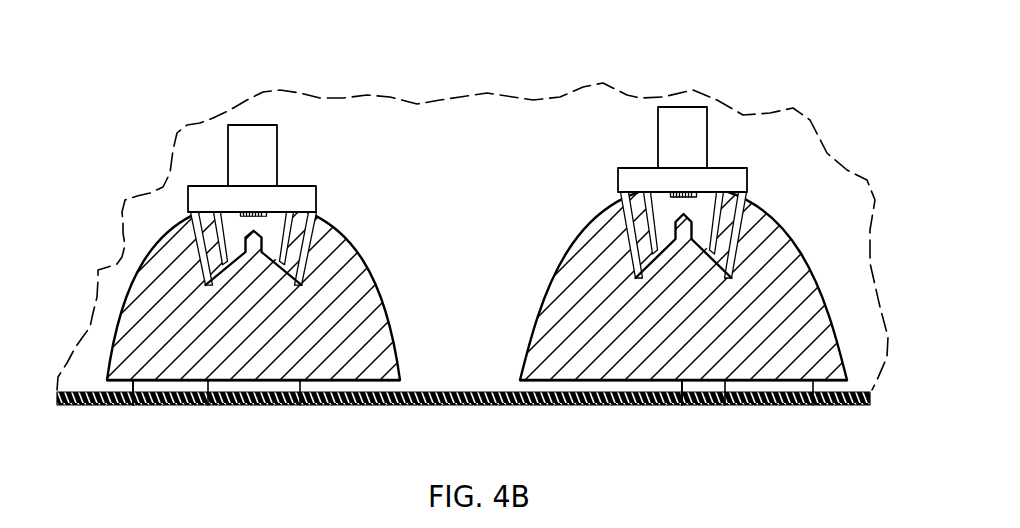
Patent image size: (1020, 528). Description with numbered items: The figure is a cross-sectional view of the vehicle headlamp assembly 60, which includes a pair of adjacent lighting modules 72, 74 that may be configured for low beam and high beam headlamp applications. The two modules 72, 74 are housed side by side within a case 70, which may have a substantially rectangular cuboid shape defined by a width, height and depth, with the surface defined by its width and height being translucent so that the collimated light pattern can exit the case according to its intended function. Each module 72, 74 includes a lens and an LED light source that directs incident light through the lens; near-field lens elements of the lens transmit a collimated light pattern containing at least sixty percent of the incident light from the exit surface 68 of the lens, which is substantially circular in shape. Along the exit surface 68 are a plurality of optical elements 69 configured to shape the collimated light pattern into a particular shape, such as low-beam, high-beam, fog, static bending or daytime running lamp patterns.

The vehicle headlamp assembly 60 is at (783, 72).
The exit surface 68 is at (133, 405).
The optical elements 69 is at (300, 405).
The case 70 is at (70, 405).
The lighting module 72 is at (242, 253).
The lighting module 74 is at (682, 244).